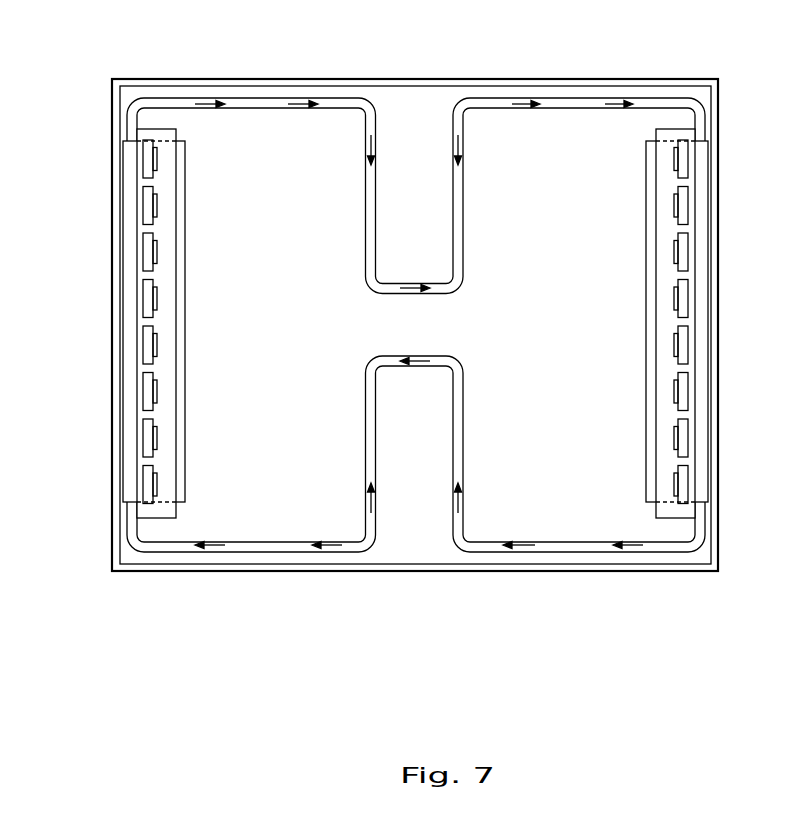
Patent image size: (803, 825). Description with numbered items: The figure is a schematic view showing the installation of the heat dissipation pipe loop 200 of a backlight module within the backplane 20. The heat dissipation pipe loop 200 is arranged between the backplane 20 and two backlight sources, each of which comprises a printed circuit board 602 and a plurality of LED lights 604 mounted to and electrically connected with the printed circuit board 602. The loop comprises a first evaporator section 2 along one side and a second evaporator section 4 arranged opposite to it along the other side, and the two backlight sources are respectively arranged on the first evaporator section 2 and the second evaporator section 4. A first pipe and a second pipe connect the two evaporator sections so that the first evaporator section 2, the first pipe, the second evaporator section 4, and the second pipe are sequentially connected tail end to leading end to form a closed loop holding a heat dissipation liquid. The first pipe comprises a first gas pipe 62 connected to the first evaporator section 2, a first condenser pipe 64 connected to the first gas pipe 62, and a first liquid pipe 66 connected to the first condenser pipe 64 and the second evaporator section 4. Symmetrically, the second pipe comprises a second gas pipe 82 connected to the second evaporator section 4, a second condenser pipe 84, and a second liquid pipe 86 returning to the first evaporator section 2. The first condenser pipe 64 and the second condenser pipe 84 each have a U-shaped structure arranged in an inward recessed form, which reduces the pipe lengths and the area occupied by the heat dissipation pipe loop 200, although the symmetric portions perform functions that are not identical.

The first evaporator section 2 is at (115, 310).
The second evaporator section 4 is at (700, 320).
The backplane 20 is at (115, 416).
The heat dissipation pipe loop 200 is at (678, 548).
The first gas pipe 62 is at (245, 106).
The first condenser pipe 64 is at (437, 289).
The first liquid pipe 66 is at (588, 107).
The second gas pipe 82 is at (590, 545).
The second condenser pipe 84 is at (436, 360).
The second liquid pipe 86 is at (246, 543).
The printed circuit board 602 is at (145, 133).
The LED lights 604 is at (147, 160).